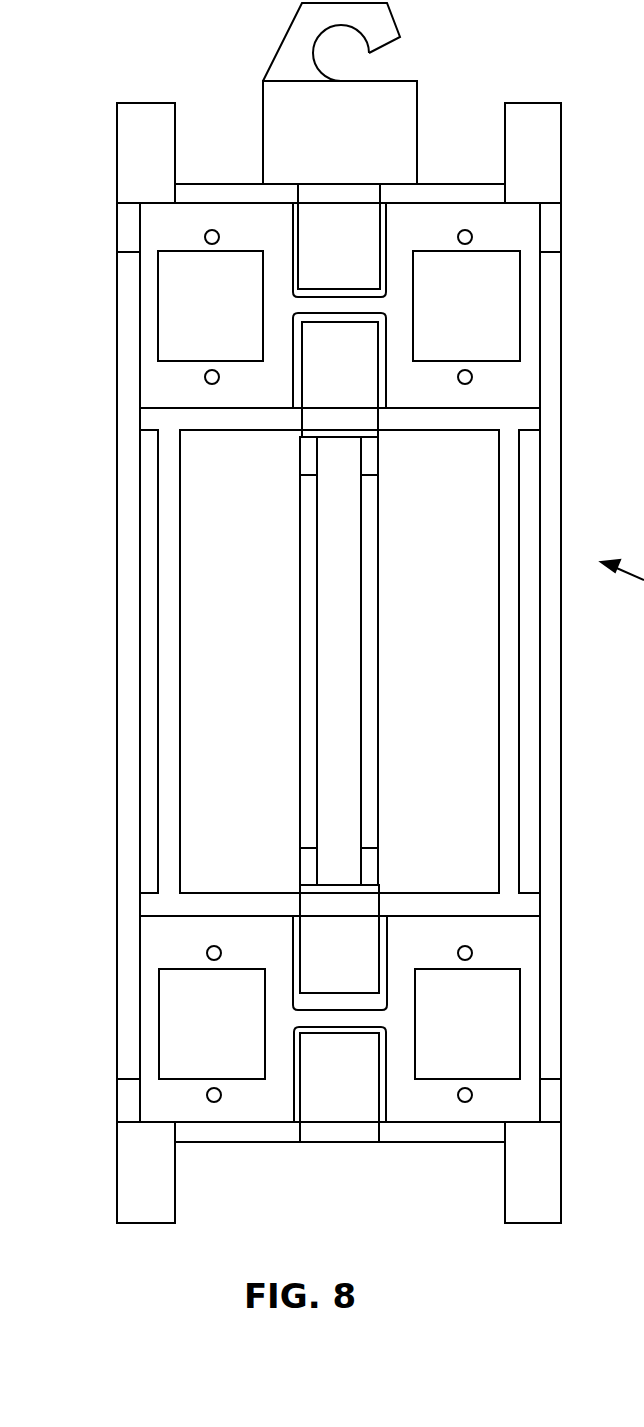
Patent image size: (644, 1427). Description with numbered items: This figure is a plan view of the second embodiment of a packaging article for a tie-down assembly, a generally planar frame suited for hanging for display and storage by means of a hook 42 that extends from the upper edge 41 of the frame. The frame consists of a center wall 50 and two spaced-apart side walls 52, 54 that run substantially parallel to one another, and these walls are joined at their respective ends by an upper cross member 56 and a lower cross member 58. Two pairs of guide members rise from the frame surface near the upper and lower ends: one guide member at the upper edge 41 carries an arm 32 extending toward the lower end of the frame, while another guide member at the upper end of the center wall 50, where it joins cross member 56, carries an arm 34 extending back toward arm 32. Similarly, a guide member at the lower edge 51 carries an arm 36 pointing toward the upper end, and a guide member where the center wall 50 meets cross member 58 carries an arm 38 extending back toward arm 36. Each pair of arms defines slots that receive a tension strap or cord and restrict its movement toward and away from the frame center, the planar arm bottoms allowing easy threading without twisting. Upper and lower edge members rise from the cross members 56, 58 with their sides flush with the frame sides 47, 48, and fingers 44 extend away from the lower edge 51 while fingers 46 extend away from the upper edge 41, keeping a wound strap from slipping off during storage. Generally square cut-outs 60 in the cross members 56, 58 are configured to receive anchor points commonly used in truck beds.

The arm 32 is at (333, 268).
The arm 34 is at (330, 384).
The arm 36 is at (320, 1055).
The arm 38 is at (328, 957).
The upper edge 41 is at (225, 183).
The hook 42 is at (393, 15).
The fingers 44 is at (148, 100).
The fingers 46 is at (152, 1224).
The frame side 47 is at (561, 705).
The frame side 48 is at (117, 687).
The center wall 50 is at (378, 607).
The lower edge 51 is at (422, 1143).
The side wall 52 is at (498, 698).
The side wall 54 is at (182, 610).
The cross member 56 is at (230, 430).
The cross member 58 is at (235, 892).
The cut-outs 60 is at (238, 336).